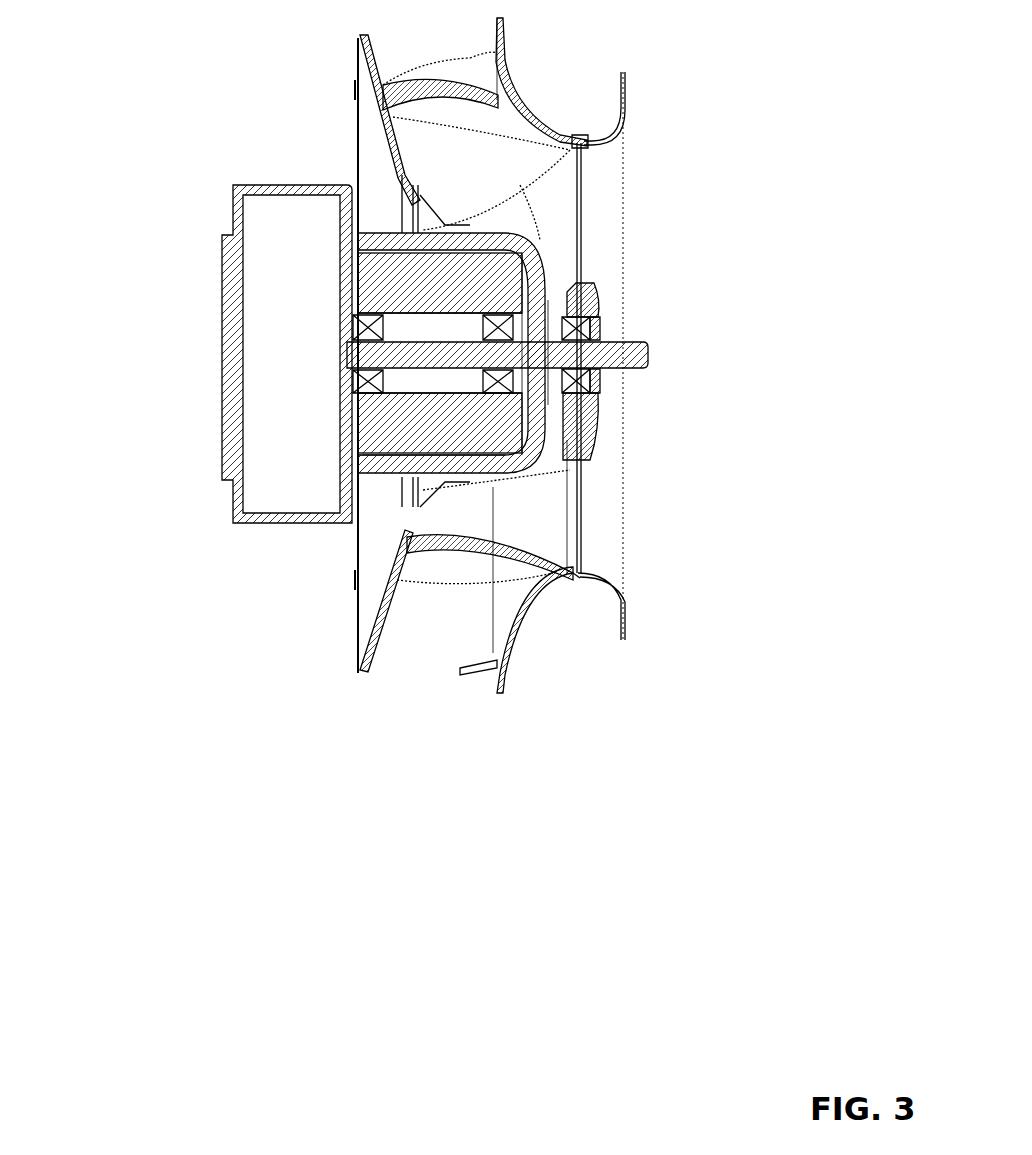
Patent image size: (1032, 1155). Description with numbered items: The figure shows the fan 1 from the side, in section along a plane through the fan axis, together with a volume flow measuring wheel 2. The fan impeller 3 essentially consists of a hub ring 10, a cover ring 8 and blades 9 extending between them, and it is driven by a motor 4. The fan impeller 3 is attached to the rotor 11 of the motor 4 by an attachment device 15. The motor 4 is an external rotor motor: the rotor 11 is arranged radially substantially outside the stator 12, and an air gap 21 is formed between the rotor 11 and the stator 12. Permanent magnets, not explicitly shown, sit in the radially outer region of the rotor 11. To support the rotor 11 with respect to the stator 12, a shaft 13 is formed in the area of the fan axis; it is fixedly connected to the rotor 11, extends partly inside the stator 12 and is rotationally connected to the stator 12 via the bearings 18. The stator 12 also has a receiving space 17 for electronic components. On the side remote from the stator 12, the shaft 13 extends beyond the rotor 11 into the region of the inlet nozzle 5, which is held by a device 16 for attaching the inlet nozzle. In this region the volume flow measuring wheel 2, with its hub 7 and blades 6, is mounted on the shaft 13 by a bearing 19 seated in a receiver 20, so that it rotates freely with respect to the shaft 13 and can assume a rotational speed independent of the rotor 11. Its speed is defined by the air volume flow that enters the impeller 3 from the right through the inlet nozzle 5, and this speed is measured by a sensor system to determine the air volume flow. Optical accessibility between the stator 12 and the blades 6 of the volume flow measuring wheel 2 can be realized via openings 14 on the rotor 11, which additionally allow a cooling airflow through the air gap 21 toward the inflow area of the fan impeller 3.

The fan 1 is at (735, 625).
The volume flow measuring wheel 2 is at (685, 398).
The fan impeller 3 is at (375, 354).
The motor 4 is at (430, 363).
The inlet nozzle 5 is at (607, 172).
The blades of the volume flow measuring wheel 6 is at (595, 430).
The hub of the volume flow measuring wheel 7 is at (597, 303).
The cover ring of the impeller 8 is at (510, 75).
The blades of the impeller 9 is at (455, 150).
The hub ring of the impeller 10 is at (362, 118).
The rotor of the motor 11 is at (520, 240).
The stator of the motor 12 is at (360, 266).
The shaft 13 is at (594, 355).
The openings in the rotor 14 is at (540, 428).
The attachment device 15 is at (430, 480).
The device for attaching the inlet nozzle 16 is at (630, 90).
The receiving space for electronic components 17 is at (300, 289).
The bearings 18 is at (485, 378).
The bearing 19 is at (590, 390).
The receiver in the volume flow measuring wheel for the support 20 is at (590, 330).
The air gap 21 is at (385, 458).